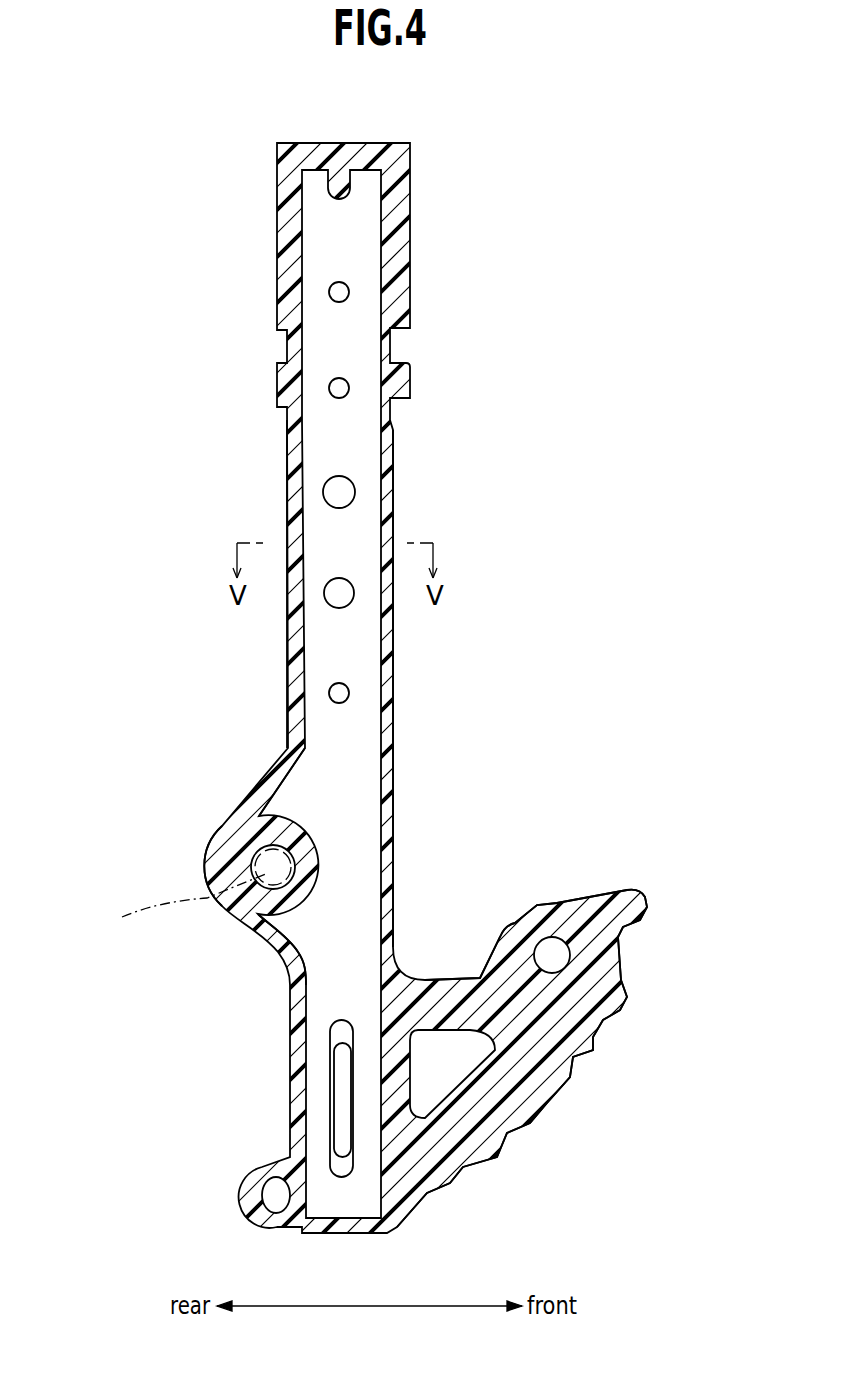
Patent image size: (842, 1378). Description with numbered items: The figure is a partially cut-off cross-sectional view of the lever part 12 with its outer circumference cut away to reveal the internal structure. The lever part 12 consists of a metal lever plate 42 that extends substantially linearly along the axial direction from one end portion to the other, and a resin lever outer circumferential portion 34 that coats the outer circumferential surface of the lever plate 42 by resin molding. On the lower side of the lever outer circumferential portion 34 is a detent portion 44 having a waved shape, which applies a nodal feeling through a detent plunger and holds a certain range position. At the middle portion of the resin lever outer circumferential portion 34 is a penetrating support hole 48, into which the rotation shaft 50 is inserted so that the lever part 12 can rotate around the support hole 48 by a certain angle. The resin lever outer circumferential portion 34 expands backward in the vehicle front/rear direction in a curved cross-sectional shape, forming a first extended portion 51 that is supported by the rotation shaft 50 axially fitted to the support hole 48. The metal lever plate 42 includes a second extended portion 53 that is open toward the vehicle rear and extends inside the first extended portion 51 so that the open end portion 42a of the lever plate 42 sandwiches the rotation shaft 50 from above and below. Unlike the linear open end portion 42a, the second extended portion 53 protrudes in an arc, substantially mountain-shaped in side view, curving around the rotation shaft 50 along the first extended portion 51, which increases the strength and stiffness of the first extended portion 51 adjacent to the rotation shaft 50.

The lever part 12 is at (267, 647).
The resin lever outer circumferential portion 34 is at (395, 705).
The metal lever plate 42 is at (353, 449).
The open end portion 42a is at (288, 498).
The detent portion 44 is at (543, 1103).
The support hole 48 is at (268, 855).
The rotation shaft 50 is at (177, 905).
The first extended portion 51 is at (205, 833).
The second extended portion 53 is at (260, 818).